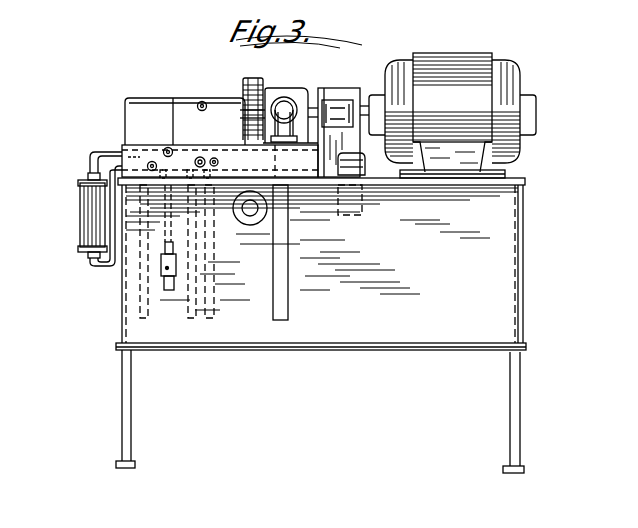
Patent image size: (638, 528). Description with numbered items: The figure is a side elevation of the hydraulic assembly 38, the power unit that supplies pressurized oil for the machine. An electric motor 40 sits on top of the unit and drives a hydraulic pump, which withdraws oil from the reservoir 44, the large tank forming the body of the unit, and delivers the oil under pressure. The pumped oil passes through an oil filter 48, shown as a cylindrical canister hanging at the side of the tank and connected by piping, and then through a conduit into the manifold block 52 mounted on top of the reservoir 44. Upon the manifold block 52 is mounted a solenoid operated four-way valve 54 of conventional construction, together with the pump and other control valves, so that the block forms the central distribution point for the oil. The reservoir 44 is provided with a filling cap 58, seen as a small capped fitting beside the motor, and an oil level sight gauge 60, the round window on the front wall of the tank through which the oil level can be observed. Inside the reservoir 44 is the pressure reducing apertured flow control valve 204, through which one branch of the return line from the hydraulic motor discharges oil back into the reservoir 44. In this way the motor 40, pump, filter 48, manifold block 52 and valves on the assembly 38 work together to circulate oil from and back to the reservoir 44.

The hydraulic assembly 38 is at (146, 78).
The electric motor 40 is at (455, 68).
The reservoir 44 is at (490, 270).
The oil filter 48 is at (80, 213).
The manifold block 52 is at (258, 168).
The solenoid operated four-way valve 54 is at (183, 112).
The filling cap 58 is at (365, 163).
The oil level sight gauge 60 is at (250, 216).
The pressure reducing apertured flow control valve 204 is at (166, 268).